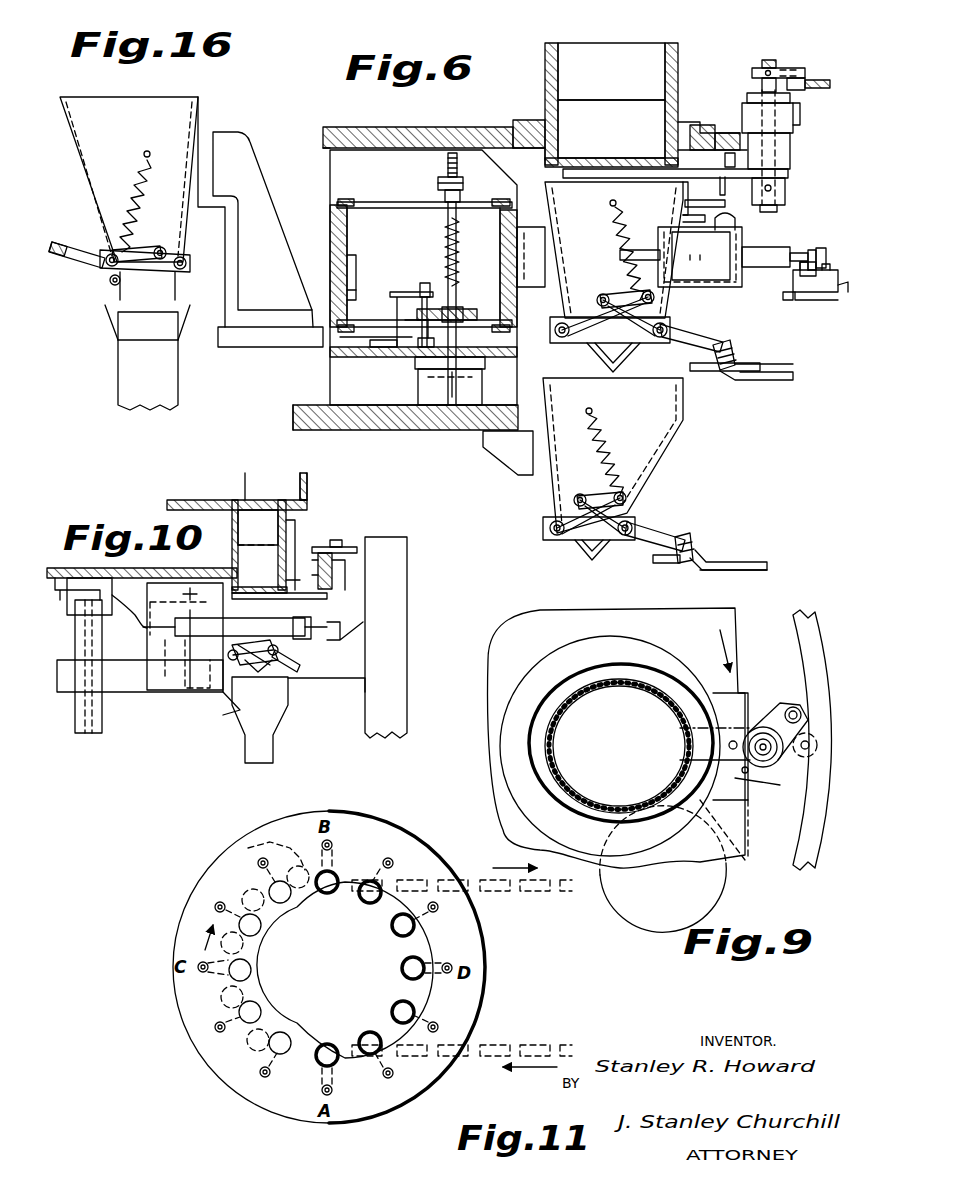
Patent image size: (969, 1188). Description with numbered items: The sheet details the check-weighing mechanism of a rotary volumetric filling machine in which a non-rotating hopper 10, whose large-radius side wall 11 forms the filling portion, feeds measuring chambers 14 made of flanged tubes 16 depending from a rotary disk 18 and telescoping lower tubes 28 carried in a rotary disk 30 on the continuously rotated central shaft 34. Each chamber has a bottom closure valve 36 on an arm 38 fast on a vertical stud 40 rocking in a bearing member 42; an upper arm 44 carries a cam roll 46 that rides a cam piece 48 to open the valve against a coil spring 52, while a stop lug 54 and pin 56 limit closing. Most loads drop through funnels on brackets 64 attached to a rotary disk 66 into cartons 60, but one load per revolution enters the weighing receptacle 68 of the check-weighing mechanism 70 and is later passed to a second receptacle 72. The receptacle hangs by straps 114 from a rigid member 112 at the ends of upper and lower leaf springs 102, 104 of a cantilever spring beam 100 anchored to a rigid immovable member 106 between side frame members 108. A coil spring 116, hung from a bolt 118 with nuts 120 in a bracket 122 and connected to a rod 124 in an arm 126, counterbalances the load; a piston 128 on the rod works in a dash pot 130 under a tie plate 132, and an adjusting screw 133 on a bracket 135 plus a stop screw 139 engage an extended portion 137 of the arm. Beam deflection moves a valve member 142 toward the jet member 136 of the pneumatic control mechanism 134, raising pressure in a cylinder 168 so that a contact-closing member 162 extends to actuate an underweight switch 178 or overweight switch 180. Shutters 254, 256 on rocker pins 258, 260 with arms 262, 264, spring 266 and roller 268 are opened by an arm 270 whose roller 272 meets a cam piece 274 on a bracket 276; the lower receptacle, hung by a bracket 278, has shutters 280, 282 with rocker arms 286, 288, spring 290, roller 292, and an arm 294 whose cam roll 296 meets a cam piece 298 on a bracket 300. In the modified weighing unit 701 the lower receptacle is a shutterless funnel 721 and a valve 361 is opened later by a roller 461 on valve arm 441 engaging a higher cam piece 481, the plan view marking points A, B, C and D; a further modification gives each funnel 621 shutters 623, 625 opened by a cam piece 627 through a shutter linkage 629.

In FIG. 10, the hopper 10 is at (250, 483).
In FIG. 11, the hopper 10 is at (400, 885).
In FIG. 11, the side wall 11 is at (405, 935).
In FIG. 6, the measuring chamber 14 is at (611, 71).
In FIG. 10, the measuring chamber 14 is at (258, 543).
In FIG. 9, the measuring chamber 14 is at (619, 746).
In FIG. 11, the measuring chamber 14 is at (400, 1005).
In FIG. 6, the flanged tube 16 is at (570, 62).
In FIG. 10, the flanged tube 16 is at (232, 492).
In FIG. 10, the rotary disk 18 is at (180, 500).
In FIG. 6, the upstanding tube 28 is at (560, 114).
In FIG. 10, the upstanding tube 28 is at (232, 545).
In FIG. 6, the rotary disk 30 is at (456, 127).
In FIG. 10, the rotary disk 30 is at (55, 568).
In FIG. 10, the central shaft 34 is at (80, 715).
In FIG. 6, the bottom closure valve 36 is at (616, 166).
In FIG. 9, the bottom closure valve 36 is at (633, 905).
In FIG. 11, the bottom closure valve 36 is at (285, 870).
In FIG. 6, the arm 38 is at (780, 186).
In FIG. 9, the arm 38 is at (730, 850).
In FIG. 6, the vertical stud 40 is at (770, 68).
In FIG. 6, the bearing member 42 is at (770, 118).
In FIG. 6, the arm 44 is at (790, 68).
In FIG. 6, the cam roll 46 is at (795, 92).
In FIG. 9, the cam roll 46 is at (786, 710).
In FIG. 6, the cam piece 48 is at (812, 80).
In FIG. 9, the cam piece 48 is at (805, 630).
In FIG. 6, the coil spring 52 is at (760, 85).
In FIG. 6, the stop lug 54 is at (727, 160).
In FIG. 9, the stop lug 54 is at (725, 700).
In FIG. 6, the pin 56 is at (732, 178).
In FIG. 9, the pin 56 is at (745, 786).
In FIG. 16, the carton 60 is at (148, 361).
In FIG. 16, the bracket 64 is at (240, 130).
In FIG. 16, the rotary disk 66 is at (290, 413).
In FIG. 10, the rotary disk 66 is at (125, 692).
In FIG. 6, the weighing receptacle 68 is at (680, 290).
In FIG. 10, the weighing receptacle 68 is at (280, 645).
In FIG. 6, the check-weighing mechanism 70 is at (778, 232).
In FIG. 6, the second receptacle 72 is at (683, 420).
In FIG. 6, the cantilever spring beam 100 is at (405, 195).
In FIG. 10, the cantilever spring beam 100 is at (175, 598).
In FIG. 6, the upper leaf spring 102 is at (385, 200).
In FIG. 6, the lower leaf spring 104 is at (386, 300).
In FIG. 6, the rigid immovable member 106 is at (340, 236).
In FIG. 6, the side frame member 108 is at (330, 170).
In FIG. 6, the rigid member 112 is at (470, 249).
In FIG. 6, the strap 114 is at (527, 210).
In FIG. 6, the coil spring 116 is at (447, 236).
In FIG. 6, the bolt 118 is at (452, 160).
In FIG. 6, the nut 120 is at (440, 181).
In FIG. 6, the bracket 122 is at (464, 183).
In FIG. 6, the rod 124 is at (453, 297).
In FIG. 6, the arm 126 is at (505, 320).
In FIG. 6, the piston 128 is at (420, 380).
In FIG. 6, the dash pot 130 is at (455, 398).
In FIG. 6, the tie plate 132 is at (400, 330).
In FIG. 6, the adjusting screw 133 is at (428, 283).
In FIG. 6, the pneumatically operated control mechanism 134 is at (770, 282).
In FIG. 6, the bracket 135 is at (380, 330).
In FIG. 6, the jet member 136 is at (727, 222).
In FIG. 6, the extended portion 137 is at (417, 337).
In FIG. 6, the stop screw 139 is at (370, 395).
In FIG. 6, the valve member 142 is at (688, 215).
In FIG. 6, the contact-closing member 162 is at (803, 262).
In FIG. 6, the cylinder 168 is at (810, 250).
In FIG. 6, the underweight switch 178 is at (790, 290).
In FIG. 6, the overweight switch 180 is at (823, 292).
In FIG. 6, the shutter 254 is at (585, 365).
In FIG. 10, the shutter 254 is at (238, 716).
In FIG. 6, the shutter 256 is at (630, 370).
In FIG. 10, the shutter 256 is at (265, 668).
In FIG. 6, the rocker pin 258 is at (550, 340).
In FIG. 6, the rocker pin 260 is at (672, 350).
In FIG. 6, the arm 262 is at (590, 296).
In FIG. 6, the arm 264 is at (625, 280).
In FIG. 6, the spring 266 is at (613, 206).
In FIG. 6, the roller 268 is at (603, 297).
In FIG. 6, the arm 270 is at (738, 321).
In FIG. 6, the roller 272 is at (792, 374).
In FIG. 6, the cam piece 274 is at (740, 376).
In FIG. 6, the bracket 276 is at (755, 374).
In FIG. 6, the bracket 278 is at (520, 465).
In FIG. 6, the shutter 280 is at (580, 548).
In FIG. 6, the shutter 282 is at (610, 556).
In FIG. 6, the rocker arm 286 is at (560, 520).
In FIG. 6, the rocker arm 288 is at (645, 516).
In FIG. 6, the spring 290 is at (615, 452).
In FIG. 6, the roller 292 is at (600, 499).
In FIG. 6, the arm 294 is at (670, 528).
In FIG. 6, the cam roll 296 is at (700, 548).
In FIG. 6, the cam piece 298 is at (700, 561).
In FIG. 6, the bracket 300 is at (745, 571).
In FIG. 10, the valve 361 is at (300, 575).
In FIG. 10, the valve arm 441 is at (335, 540).
In FIG. 10, the roller 461 is at (345, 548).
In FIG. 10, the cam piece 481 is at (375, 555).
In FIG. 16, the funnel 621 is at (92, 178).
In FIG. 16, the shutter 623 is at (110, 300).
In FIG. 16, the shutter 625 is at (182, 282).
In FIG. 16, the cam piece 627 is at (115, 276).
In FIG. 16, the shutter linkage 629 is at (145, 235).
In FIG. 10, the weighing unit 701 is at (340, 615).
In FIG. 10, the funnel 721 is at (265, 730).